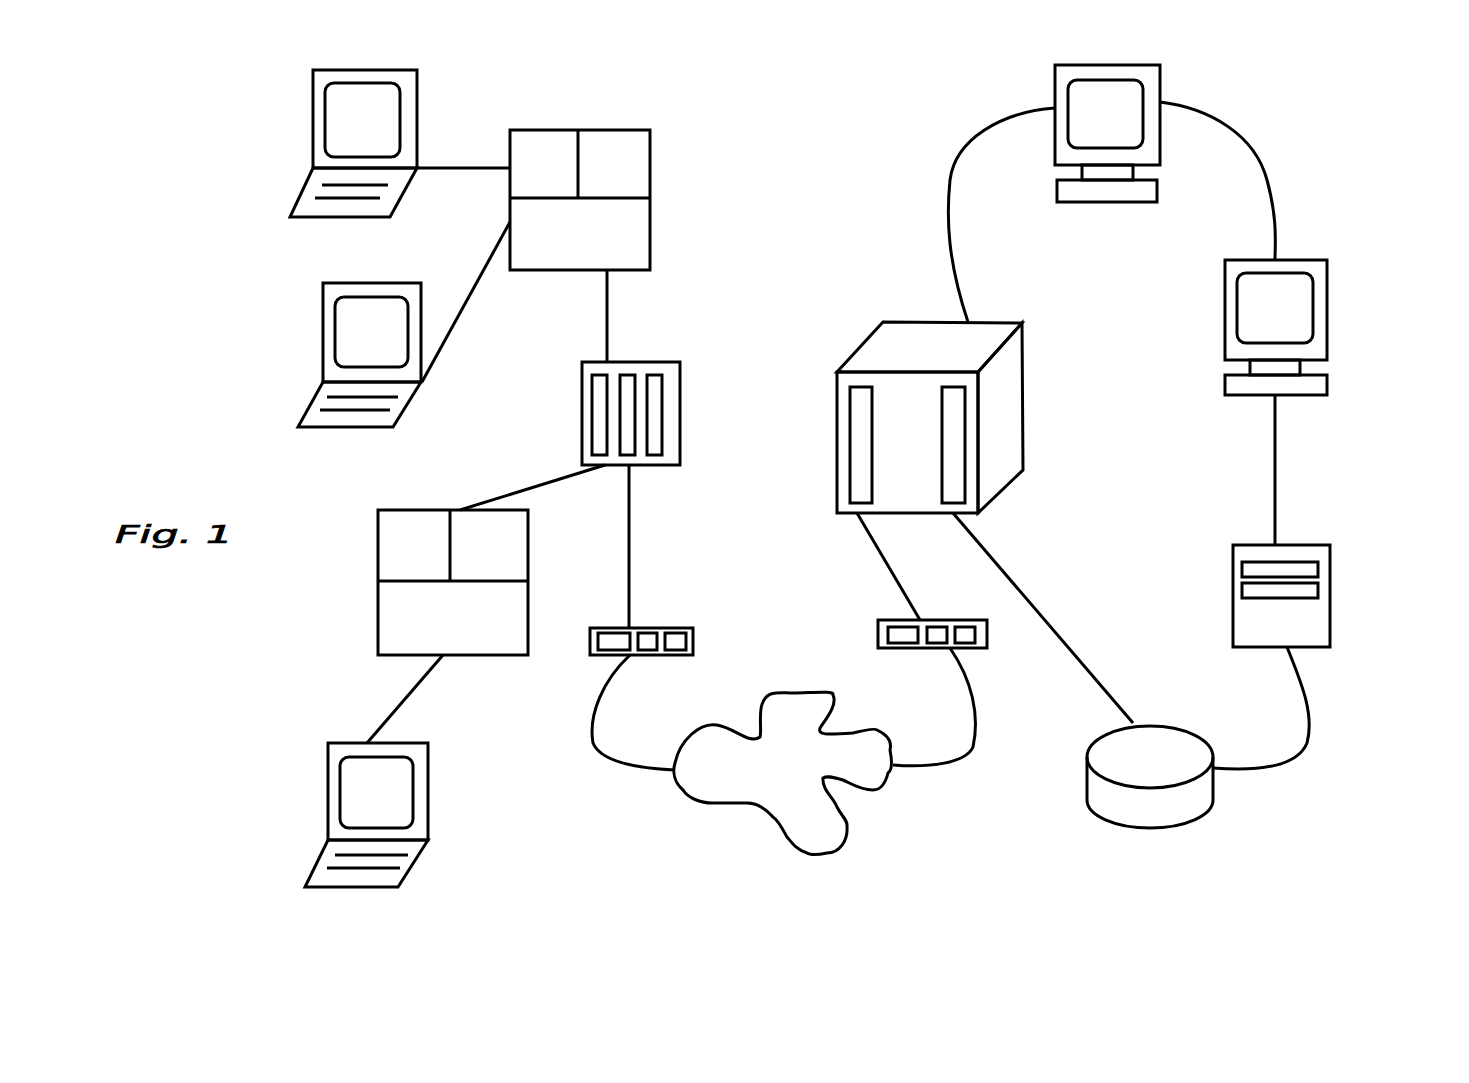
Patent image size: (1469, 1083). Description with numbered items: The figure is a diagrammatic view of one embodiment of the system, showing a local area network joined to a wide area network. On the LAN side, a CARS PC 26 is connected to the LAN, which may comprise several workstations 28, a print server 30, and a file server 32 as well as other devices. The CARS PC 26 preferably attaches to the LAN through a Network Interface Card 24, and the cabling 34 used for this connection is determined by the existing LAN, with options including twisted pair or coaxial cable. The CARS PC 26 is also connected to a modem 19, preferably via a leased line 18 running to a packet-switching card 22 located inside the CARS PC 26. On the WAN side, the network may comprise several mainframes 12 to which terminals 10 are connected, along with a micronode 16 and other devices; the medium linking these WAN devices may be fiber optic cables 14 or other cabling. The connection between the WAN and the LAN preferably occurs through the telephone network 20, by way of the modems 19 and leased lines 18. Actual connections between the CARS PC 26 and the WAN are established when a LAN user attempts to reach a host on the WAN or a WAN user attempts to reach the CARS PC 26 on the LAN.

The terminals 10 is at (331, 498).
The mainframes 12 is at (489, 395).
The fiber optic cables 14 is at (531, 455).
The X.25 micronode 16 is at (686, 443).
The leased line 18 is at (786, 617).
The modem 19 is at (788, 626).
The telephone network 20 is at (807, 808).
The X.25 card 22 is at (802, 477).
The Network Interface Card 24 is at (1053, 500).
The CARS PC 26 is at (900, 400).
The workstations 28 is at (1246, 231).
The print server 30 is at (1251, 630).
The file server 32 is at (1134, 795).
The cabling 34 is at (1125, 455).